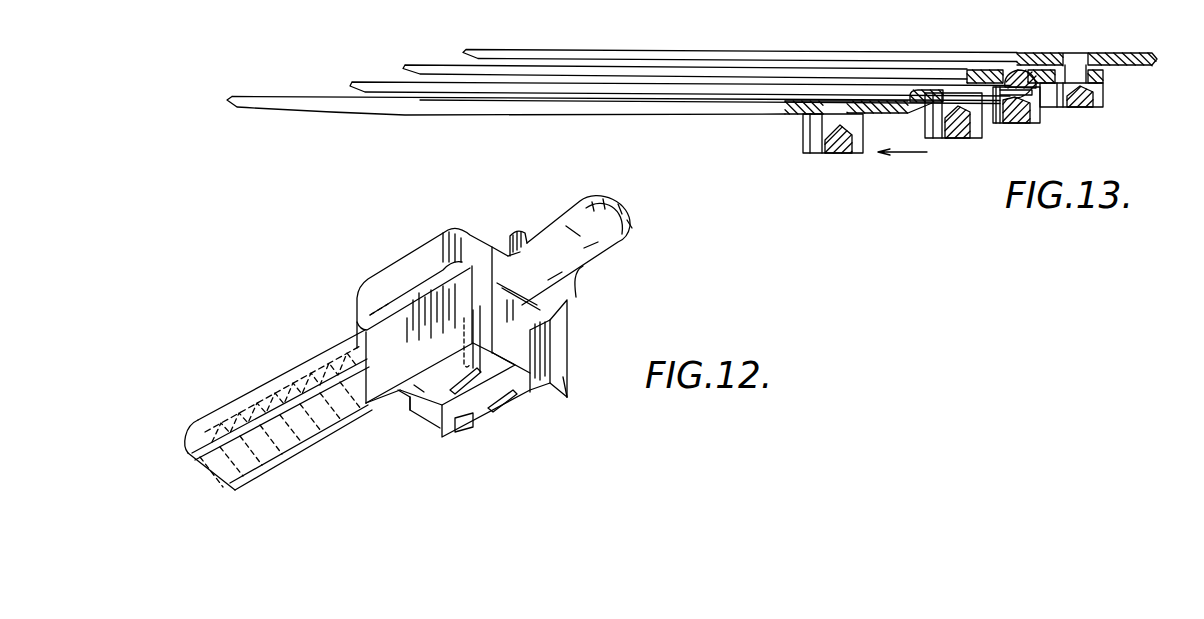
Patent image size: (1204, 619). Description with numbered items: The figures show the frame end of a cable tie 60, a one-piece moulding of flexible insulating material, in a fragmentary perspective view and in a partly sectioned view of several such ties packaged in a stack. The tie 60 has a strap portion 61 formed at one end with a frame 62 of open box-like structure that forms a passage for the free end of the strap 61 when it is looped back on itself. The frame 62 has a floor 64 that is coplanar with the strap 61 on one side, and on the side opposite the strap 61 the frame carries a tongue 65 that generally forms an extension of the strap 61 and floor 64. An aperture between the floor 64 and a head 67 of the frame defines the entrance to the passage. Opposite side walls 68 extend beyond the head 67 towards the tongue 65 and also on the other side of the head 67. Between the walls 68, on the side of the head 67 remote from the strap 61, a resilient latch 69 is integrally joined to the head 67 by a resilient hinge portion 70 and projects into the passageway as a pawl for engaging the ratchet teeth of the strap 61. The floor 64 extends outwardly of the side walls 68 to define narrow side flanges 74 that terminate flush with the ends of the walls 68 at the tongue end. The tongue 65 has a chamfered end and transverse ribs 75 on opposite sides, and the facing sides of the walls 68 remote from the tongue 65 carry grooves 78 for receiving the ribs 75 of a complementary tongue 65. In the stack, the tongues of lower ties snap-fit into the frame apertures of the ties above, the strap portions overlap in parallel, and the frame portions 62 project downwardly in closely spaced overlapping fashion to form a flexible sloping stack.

In FIG. 13, the tie 60 is at (672, 62).
In FIG. 12, the strap portion 61 is at (229, 403).
In FIG. 13, the strap portion 61 is at (697, 122).
In FIG. 13, the frame 62 is at (842, 155).
In FIG. 12, the floor 64 is at (560, 278).
In FIG. 12, the tongue 65 is at (618, 244).
In FIG. 13, the tongue 65 is at (898, 108).
In FIG. 12, the head 67 is at (468, 428).
In FIG. 12, the side walls 68 is at (396, 392).
In FIG. 12, the resilient latch 69 is at (507, 357).
In FIG. 12, the resilient hinge portion 70 is at (521, 367).
In FIG. 12, the side flanges 74 is at (397, 268).
In FIG. 12, the transverse ribs 75 is at (529, 232).
In FIG. 13, the transverse ribs 75 is at (995, 95).
In FIG. 12, the grooves 78 is at (414, 394).
In FIG. 13, the grooves 78 is at (990, 128).